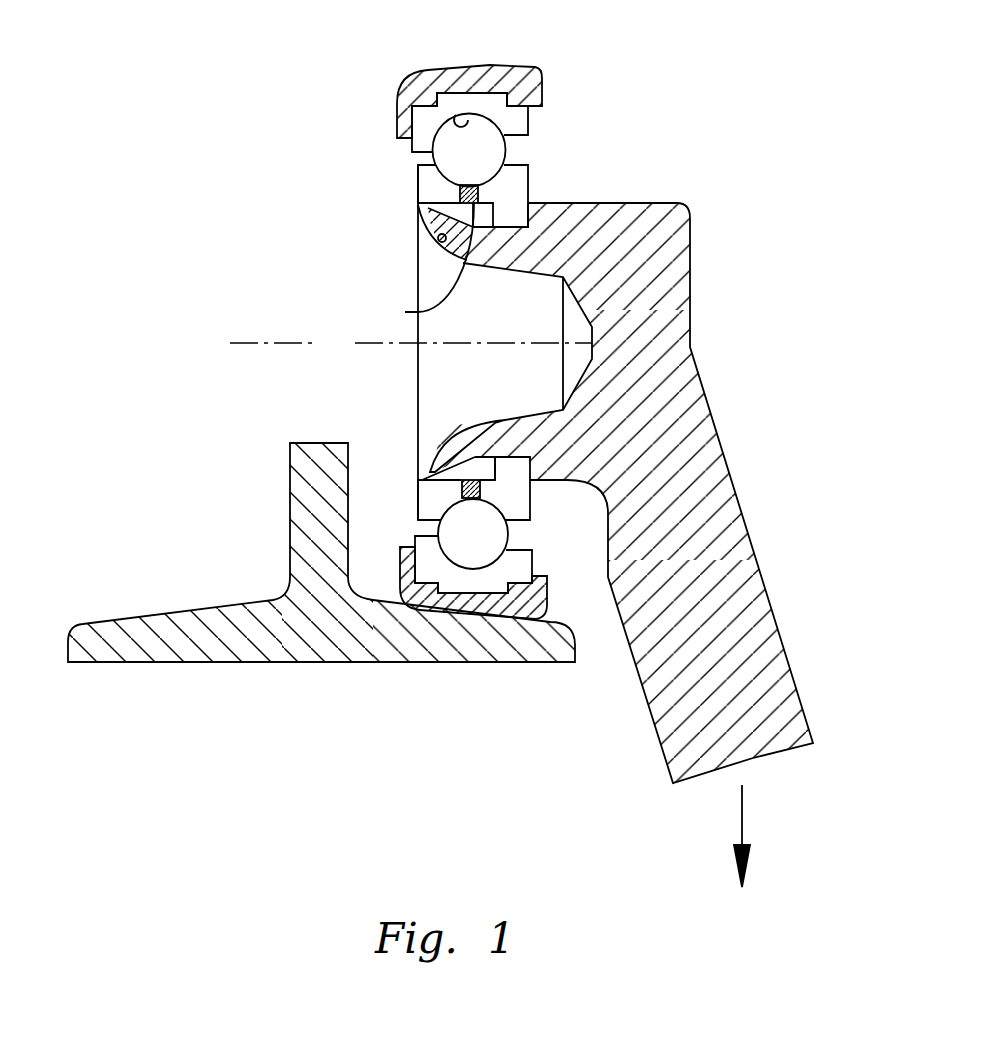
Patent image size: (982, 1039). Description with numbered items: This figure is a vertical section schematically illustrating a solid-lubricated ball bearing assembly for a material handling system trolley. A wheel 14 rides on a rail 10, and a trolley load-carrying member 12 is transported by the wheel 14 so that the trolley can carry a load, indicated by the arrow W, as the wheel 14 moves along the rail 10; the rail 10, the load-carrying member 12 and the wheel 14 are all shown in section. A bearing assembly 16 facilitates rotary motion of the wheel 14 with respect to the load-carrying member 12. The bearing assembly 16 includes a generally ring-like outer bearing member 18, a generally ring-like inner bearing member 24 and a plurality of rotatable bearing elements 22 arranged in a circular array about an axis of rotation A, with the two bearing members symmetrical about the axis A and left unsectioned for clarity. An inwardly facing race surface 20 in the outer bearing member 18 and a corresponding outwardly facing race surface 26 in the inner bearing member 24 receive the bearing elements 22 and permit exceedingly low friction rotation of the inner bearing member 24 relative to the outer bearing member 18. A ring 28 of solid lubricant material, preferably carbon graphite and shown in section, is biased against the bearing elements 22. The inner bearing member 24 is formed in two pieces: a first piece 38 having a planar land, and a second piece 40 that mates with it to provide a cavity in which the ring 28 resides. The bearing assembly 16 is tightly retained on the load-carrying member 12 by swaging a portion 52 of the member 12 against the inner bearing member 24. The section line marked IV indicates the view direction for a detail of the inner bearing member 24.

The rail 10 is at (242, 655).
The trolley load-carrying member 12 is at (713, 490).
The wheel 14 is at (515, 65).
The bearing assembly 16 is at (546, 321).
The outer bearing member 18 is at (530, 125).
The inwardly facing race surface 20 is at (467, 113).
The rotatable bearing elements 22 is at (492, 153).
The inner bearing member 24 is at (530, 183).
The outwardly facing race surface 26 is at (428, 208).
The ring of solid lubricant material 28 is at (462, 481).
The first piece 38 is at (420, 172).
The second piece 40 is at (531, 171).
The swaged portion 52 is at (428, 251).
The axis of rotation A is at (411, 342).
The load W is at (744, 860).
The section view direction IV is at (397, 187).